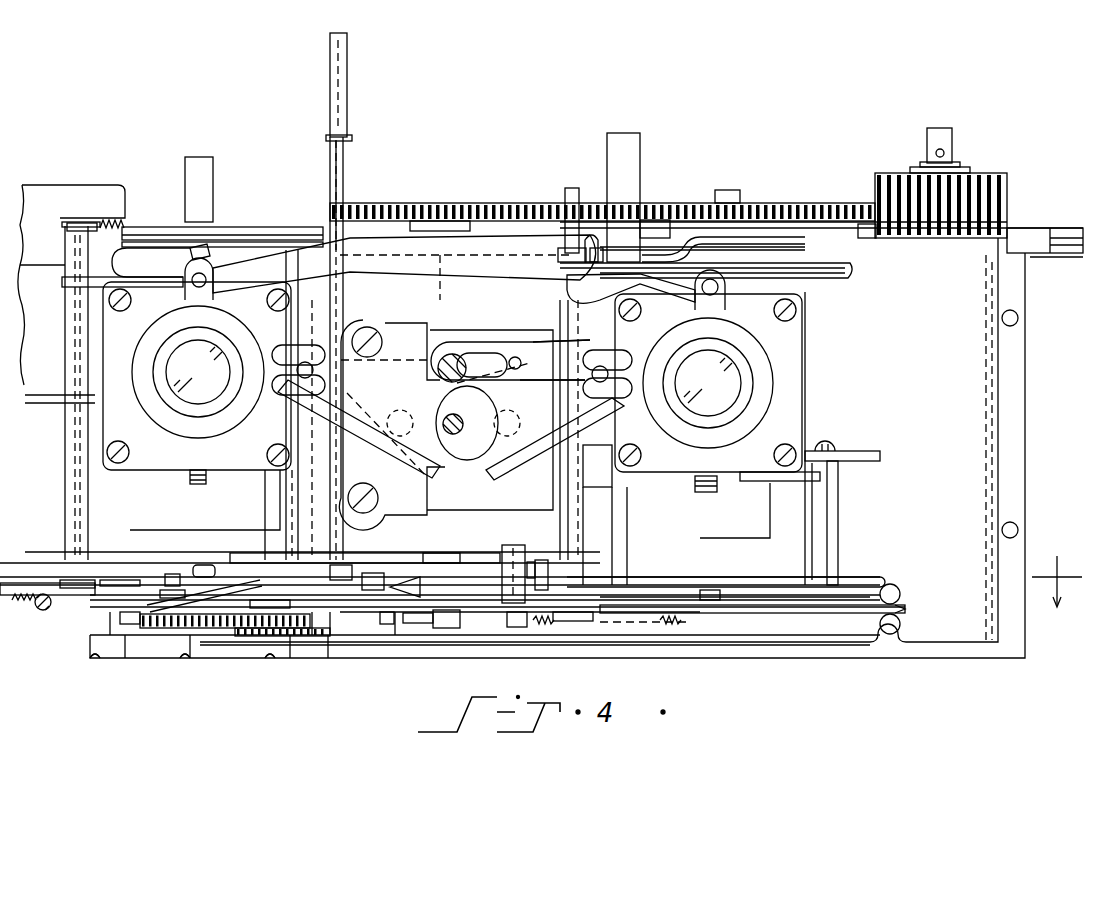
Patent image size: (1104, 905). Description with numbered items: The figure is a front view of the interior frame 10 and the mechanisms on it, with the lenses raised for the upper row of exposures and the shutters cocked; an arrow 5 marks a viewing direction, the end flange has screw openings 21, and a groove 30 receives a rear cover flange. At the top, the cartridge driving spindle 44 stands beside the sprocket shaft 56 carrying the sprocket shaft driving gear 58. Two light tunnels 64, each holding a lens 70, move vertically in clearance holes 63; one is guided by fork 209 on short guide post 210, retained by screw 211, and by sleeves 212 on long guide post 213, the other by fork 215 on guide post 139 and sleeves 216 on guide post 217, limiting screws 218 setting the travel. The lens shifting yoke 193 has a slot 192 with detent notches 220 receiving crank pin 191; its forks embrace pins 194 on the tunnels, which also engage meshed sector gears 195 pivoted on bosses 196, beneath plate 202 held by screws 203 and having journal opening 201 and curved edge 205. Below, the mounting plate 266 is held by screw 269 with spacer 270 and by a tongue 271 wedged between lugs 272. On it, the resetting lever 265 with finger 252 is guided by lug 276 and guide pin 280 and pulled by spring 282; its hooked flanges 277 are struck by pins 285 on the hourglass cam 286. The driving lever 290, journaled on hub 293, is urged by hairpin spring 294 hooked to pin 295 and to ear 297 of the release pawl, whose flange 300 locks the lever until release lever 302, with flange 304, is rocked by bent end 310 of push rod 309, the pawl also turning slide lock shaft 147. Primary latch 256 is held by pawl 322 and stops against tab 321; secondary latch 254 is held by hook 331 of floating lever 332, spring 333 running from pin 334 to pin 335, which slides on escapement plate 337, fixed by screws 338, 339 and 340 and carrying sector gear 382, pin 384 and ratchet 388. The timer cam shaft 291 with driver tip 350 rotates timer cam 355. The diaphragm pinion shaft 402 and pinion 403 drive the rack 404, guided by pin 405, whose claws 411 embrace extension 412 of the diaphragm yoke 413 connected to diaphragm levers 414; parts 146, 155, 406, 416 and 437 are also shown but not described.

The section line 5- 5 is at (1057, 569).
The interior frame 10 is at (818, 648).
The openings 21 is at (1018, 318).
The groove 30 is at (1068, 230).
The cartridge engaging and driving spindle 44 is at (952, 132).
The vertical shaft 56 is at (443, 300).
The sprocket shaft driving gear 58 is at (395, 203).
The light tunnel clearance holes 63 is at (135, 530).
The light tunnels 64 is at (165, 470).
The lenses 70 is at (188, 374).
The guide post 139 is at (66, 353).
The lever 146 is at (300, 236).
The slide lock shaft 147 is at (292, 510).
The bar 155 is at (805, 250).
The crank pin 191 is at (470, 365).
The slot 192 is at (520, 352).
The lens shifting yoke 193 is at (555, 382).
The pins 194 is at (300, 362).
The lens shifting sector gear 195 is at (280, 418).
The fixed bosses 196 is at (386, 423).
The journal opening 201 is at (450, 435).
The plate 202 is at (432, 492).
The screws 203 is at (375, 332).
The curved outer edge 205 is at (463, 424).
The guide fork 209 is at (765, 481).
The short guide post 210 is at (838, 518).
The screw 211 is at (830, 448).
The guide sleeves 212 is at (560, 325).
The long guide post 213 is at (630, 560).
The guide fork 215 is at (142, 287).
The guide sleeves 216 is at (285, 320).
The guide post 217 is at (263, 533).
The limiting screws 218 is at (200, 484).
The detent notches 220 is at (455, 354).
The shutter resetting finger 252 is at (660, 580).
The secondary shutter latch 254 is at (437, 613).
The primary shutter latch 256 is at (232, 636).
The resetting lever 265 is at (722, 596).
The timer and resetting mechanism mounting plate 266 is at (810, 613).
The screw 269 is at (540, 632).
The spacer 270 is at (510, 548).
The tongue 271 is at (900, 613).
The lugs 272 is at (897, 591).
The guiding lug 276 is at (590, 627).
The hooked flanges 277 is at (405, 578).
The guide pin 280 is at (705, 620).
The spring 282 is at (665, 628).
The driving pins 285 is at (372, 573).
The hourglass-shaped cam 286 is at (493, 570).
The driving lever 290 is at (425, 553).
The timer cam shaft 291 is at (343, 160).
The timer cam hub 293 is at (340, 565).
The hairpin driving spring 294 is at (240, 584).
The floating lever driving pin 295 is at (178, 590).
The ear 297 is at (203, 565).
The end flange 300 is at (170, 574).
The release lever 302 is at (70, 590).
The flange 304 is at (40, 606).
The release push rod 309 is at (58, 605).
The hooked end 310 is at (40, 585).
The tab 321 is at (172, 612).
The primary shutter latch pawl 322 is at (313, 612).
The hook 331 is at (460, 620).
The floating lever 332 is at (150, 612).
The spring 333 is at (385, 624).
The pin 334 is at (394, 630).
The pin 335 is at (330, 612).
The escapement mounting plate 337 is at (328, 650).
The screw 338 is at (268, 653).
The screw 339 is at (92, 658).
The screw 340 is at (192, 657).
The driver tip 350 is at (347, 40).
The timer cam 355 is at (290, 637).
The escapement sector gear 382 is at (188, 660).
The sector gear pin 384 is at (118, 650).
The escapement ratchet 388 is at (258, 612).
The diaphragm pinion shaft 402 is at (572, 188).
The pinion 403 is at (590, 235).
The diaphragm rack 404 is at (700, 203).
The guide pin 405 is at (873, 238).
The block 406 is at (378, 298).
The claws 411 is at (622, 250).
The vertical extension 412 is at (625, 133).
The diaphragm yoke 413 is at (418, 221).
The diaphragm levers 414 is at (187, 306).
The screws 416 is at (158, 420).
The bar 437 is at (112, 600).